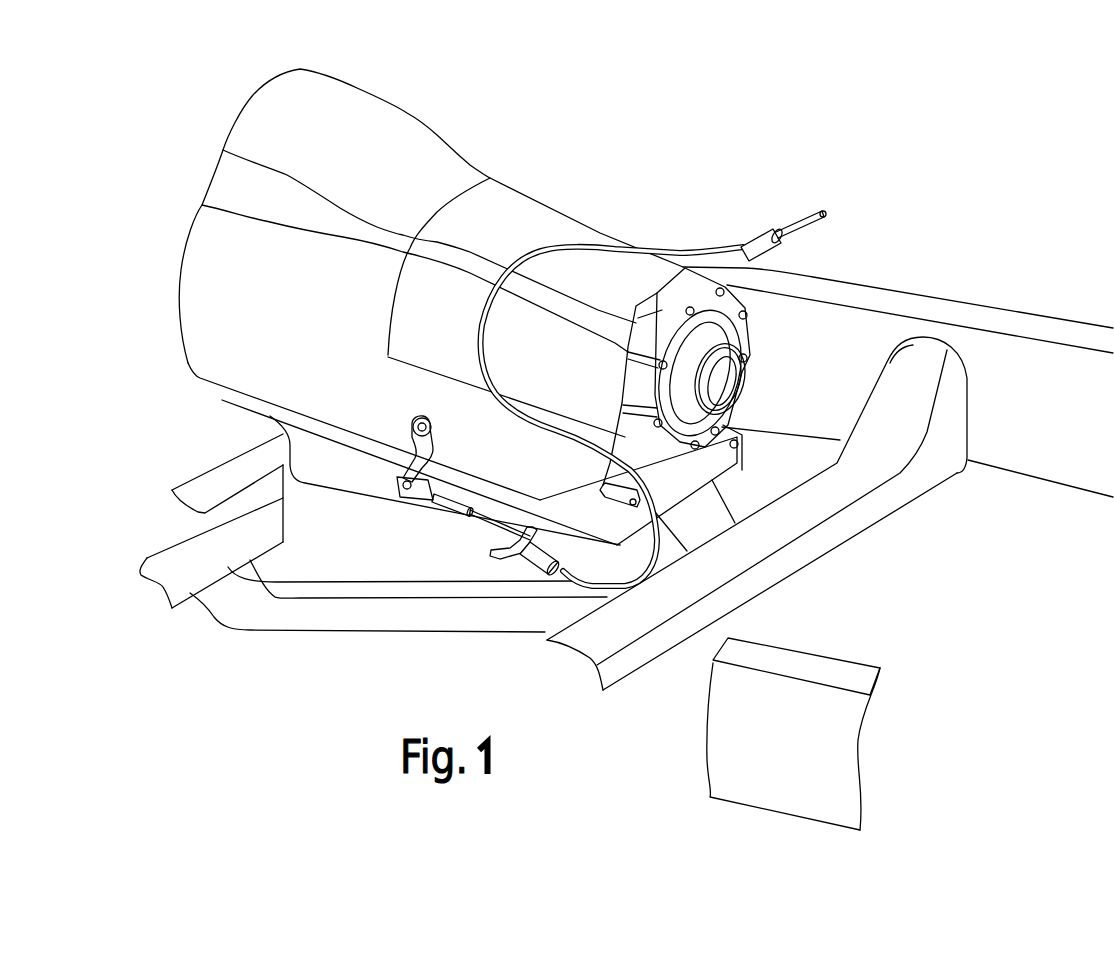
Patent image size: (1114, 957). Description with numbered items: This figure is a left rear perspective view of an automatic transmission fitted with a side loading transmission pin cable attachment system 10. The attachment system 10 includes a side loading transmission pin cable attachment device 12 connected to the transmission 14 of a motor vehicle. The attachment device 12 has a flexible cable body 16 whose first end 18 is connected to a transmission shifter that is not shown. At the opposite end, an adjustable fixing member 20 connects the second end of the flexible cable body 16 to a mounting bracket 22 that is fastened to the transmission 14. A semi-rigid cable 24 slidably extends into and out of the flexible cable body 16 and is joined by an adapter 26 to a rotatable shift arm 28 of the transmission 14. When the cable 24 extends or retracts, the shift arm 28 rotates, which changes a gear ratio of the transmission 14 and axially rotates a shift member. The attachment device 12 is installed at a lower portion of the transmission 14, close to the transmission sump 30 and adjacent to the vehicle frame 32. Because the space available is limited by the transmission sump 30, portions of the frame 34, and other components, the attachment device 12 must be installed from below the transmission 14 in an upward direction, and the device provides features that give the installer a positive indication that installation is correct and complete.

The attachment system 10 is at (920, 112).
The side loading transmission pin cable attachment device 12 is at (405, 538).
The transmission 14 is at (510, 213).
The flexible cable body 16 is at (623, 258).
The first end 18 is at (797, 223).
The adjustable fixing member 20 is at (545, 568).
The mounting bracket 22 is at (543, 530).
The semi-rigid cable 24 is at (497, 537).
The adapter 26 is at (418, 498).
The rotatable shift arm 28 is at (425, 450).
The transmission sump 30 is at (222, 402).
The vehicle frame 32 is at (406, 622).
The portions of the frame 34 is at (412, 427).